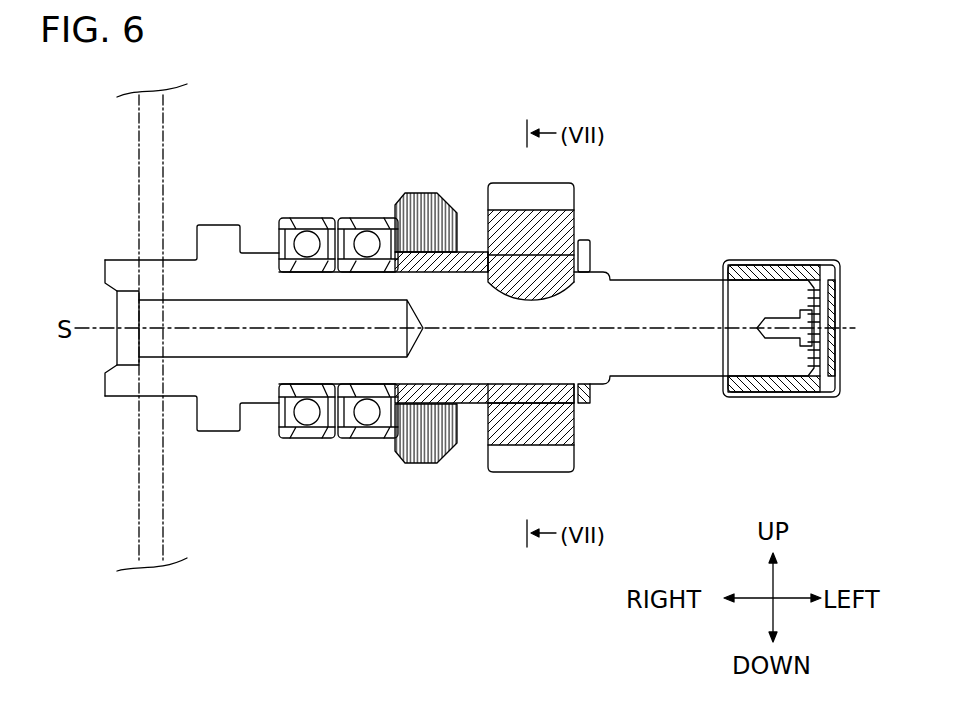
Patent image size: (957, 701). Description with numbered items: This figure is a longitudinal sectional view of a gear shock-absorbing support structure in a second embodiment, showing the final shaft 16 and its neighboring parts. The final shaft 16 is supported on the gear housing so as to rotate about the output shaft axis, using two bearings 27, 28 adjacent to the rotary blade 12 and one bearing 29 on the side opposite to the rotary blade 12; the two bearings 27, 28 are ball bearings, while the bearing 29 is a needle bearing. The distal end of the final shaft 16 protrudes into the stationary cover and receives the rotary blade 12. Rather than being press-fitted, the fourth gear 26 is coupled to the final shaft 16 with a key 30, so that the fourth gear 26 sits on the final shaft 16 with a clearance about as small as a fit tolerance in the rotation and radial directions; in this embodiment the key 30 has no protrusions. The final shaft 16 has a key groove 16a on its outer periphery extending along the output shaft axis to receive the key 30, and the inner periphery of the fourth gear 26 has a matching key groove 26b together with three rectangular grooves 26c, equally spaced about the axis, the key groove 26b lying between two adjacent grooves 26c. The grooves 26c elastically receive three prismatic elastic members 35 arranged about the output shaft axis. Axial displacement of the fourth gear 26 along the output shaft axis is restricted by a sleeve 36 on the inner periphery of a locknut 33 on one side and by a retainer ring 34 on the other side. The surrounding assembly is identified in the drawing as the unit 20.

The rotary blade 12 is at (137, 483).
The final shaft 16 is at (697, 304).
The key groove 16a is at (560, 287).
The drive unit 20 is at (500, 158).
The fourth gear 26 is at (576, 220).
The key groove 26b is at (600, 272).
The rectangular grooves 26c is at (527, 385).
The bearing 27 is at (305, 405).
The bearing 28 is at (366, 405).
The bearing 29 is at (791, 385).
The key 30 is at (504, 250).
The locknut 33 is at (417, 460).
The retainer ring 34 is at (590, 398).
The elastic members 35 is at (487, 400).
The sleeve 36 is at (483, 250).